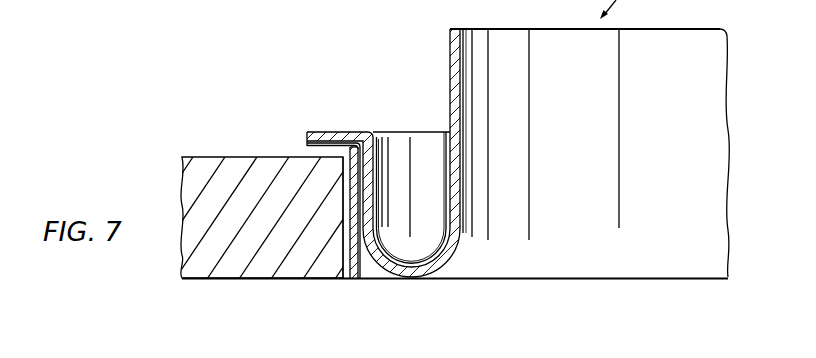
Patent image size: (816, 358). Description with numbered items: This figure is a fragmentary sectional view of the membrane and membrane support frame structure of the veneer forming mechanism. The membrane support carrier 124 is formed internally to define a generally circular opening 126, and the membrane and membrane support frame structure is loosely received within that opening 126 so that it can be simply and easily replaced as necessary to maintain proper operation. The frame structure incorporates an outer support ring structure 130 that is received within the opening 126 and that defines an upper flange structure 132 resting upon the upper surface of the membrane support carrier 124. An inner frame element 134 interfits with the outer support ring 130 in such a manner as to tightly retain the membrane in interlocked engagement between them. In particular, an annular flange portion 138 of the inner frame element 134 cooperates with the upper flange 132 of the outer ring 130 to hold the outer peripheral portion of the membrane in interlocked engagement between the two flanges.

The membrane support carrier 124 is at (230, 268).
The circular opening 126 is at (345, 272).
The outer support ring structure 130 is at (365, 270).
The upper flange structure 132 is at (306, 150).
The inner frame element 134 is at (378, 187).
The annular flange portion 138 is at (332, 132).